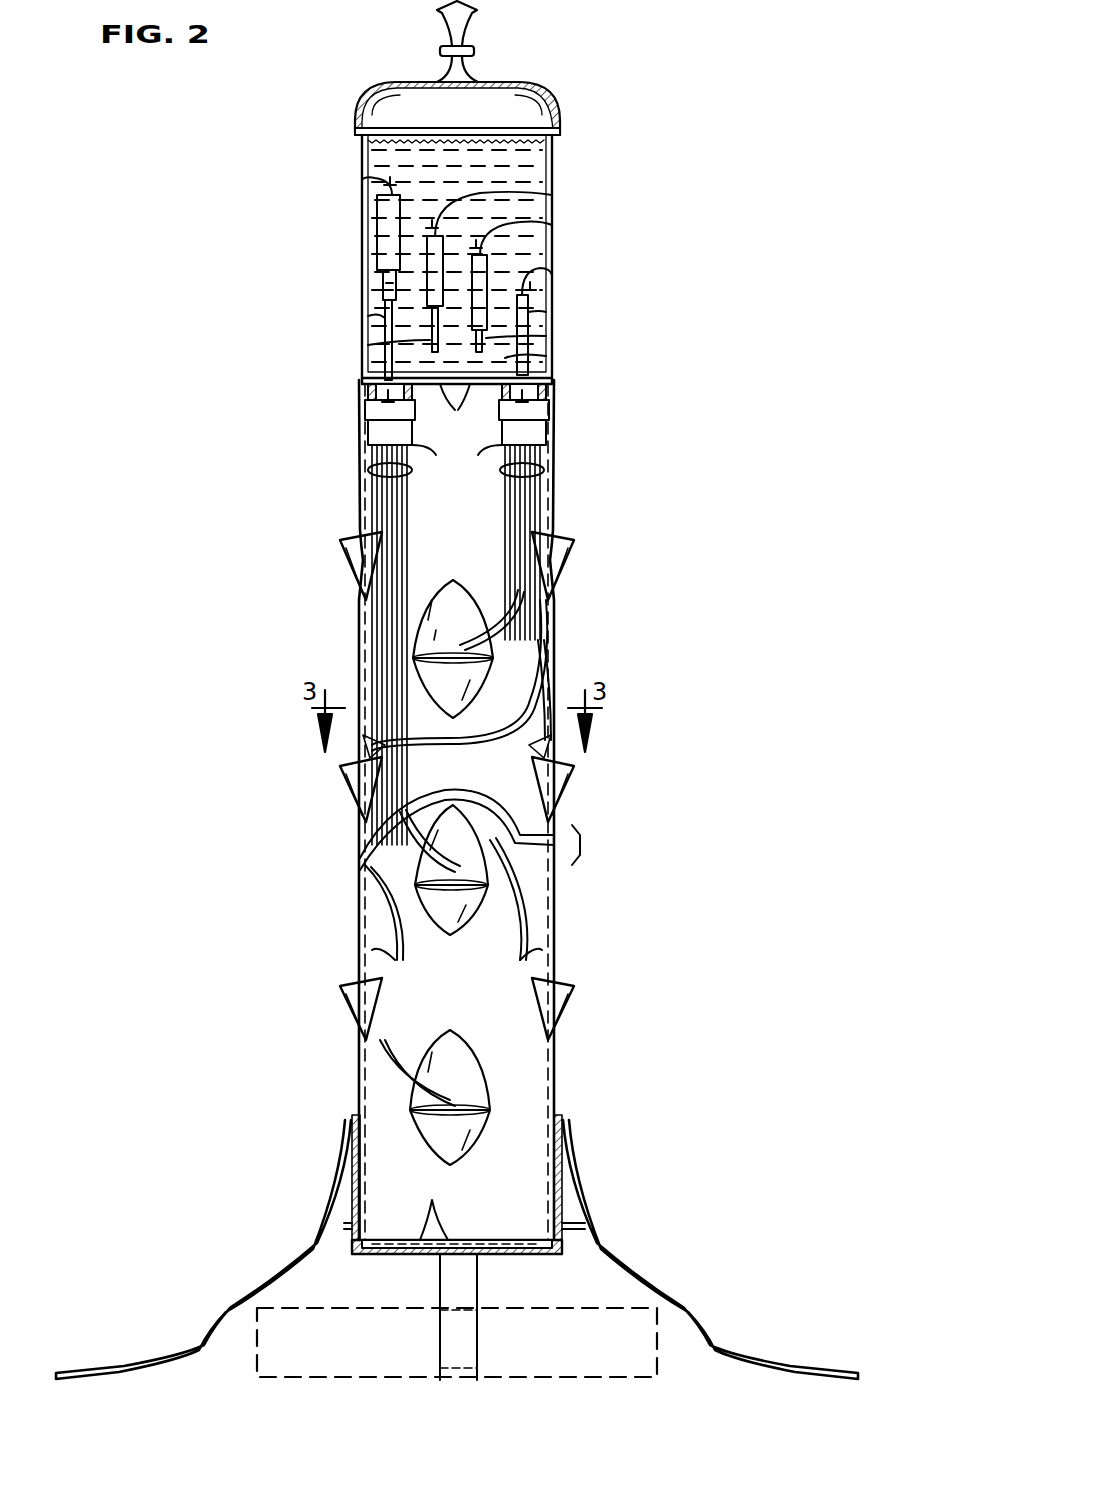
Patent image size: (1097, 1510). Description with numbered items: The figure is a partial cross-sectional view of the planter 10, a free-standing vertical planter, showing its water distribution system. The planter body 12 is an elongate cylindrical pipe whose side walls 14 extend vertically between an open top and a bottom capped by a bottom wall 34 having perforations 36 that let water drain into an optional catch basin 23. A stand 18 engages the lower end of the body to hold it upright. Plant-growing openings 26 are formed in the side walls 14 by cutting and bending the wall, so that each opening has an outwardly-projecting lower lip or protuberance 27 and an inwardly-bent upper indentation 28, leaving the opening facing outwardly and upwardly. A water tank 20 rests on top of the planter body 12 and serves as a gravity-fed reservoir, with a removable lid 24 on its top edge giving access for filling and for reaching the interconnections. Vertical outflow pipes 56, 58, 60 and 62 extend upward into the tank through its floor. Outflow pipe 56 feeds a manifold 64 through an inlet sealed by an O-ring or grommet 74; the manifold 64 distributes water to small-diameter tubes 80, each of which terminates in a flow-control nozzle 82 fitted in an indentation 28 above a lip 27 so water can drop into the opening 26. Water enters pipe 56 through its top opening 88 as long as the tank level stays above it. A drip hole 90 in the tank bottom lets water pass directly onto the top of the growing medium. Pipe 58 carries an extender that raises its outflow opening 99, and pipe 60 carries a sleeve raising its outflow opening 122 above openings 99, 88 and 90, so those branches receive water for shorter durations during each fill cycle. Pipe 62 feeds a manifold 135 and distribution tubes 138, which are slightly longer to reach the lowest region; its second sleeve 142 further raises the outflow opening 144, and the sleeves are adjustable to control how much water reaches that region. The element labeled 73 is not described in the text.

The planter 10 is at (260, 318).
The planter body 12 is at (356, 638).
The side walls 14 is at (362, 870).
The stand 18 is at (620, 1250).
The water tank 20 is at (556, 162).
The catch basin 23 is at (600, 1308).
The removable lid 24 is at (515, 85).
The openings 26 is at (365, 548).
The protuberance 27 is at (360, 565).
The indentation 28 is at (385, 515).
The bottom wall 34 is at (500, 1232).
The perforations 36 is at (428, 1205).
The outflow pipe 56 is at (528, 310).
The outflow pipe 58 is at (528, 338).
The outflow pipe 60 is at (430, 340).
The outflow pipe 62 is at (385, 316).
The water distribution manifold 64 is at (548, 400).
The tube fitting 73 is at (505, 358).
The O-ring 74 is at (502, 445).
The outflow tubes 80 is at (540, 470).
The flow-control nozzle 82 is at (372, 950).
The top opening 88 is at (524, 296).
The drip hole 90 is at (455, 388).
The outflow opening 99 is at (482, 256).
The outflow opening 122 is at (440, 232).
The manifold 135 is at (372, 400).
The distribution tubes 138 is at (378, 470).
The second sleeve 142 is at (385, 232).
The outflow opening 144 is at (388, 195).